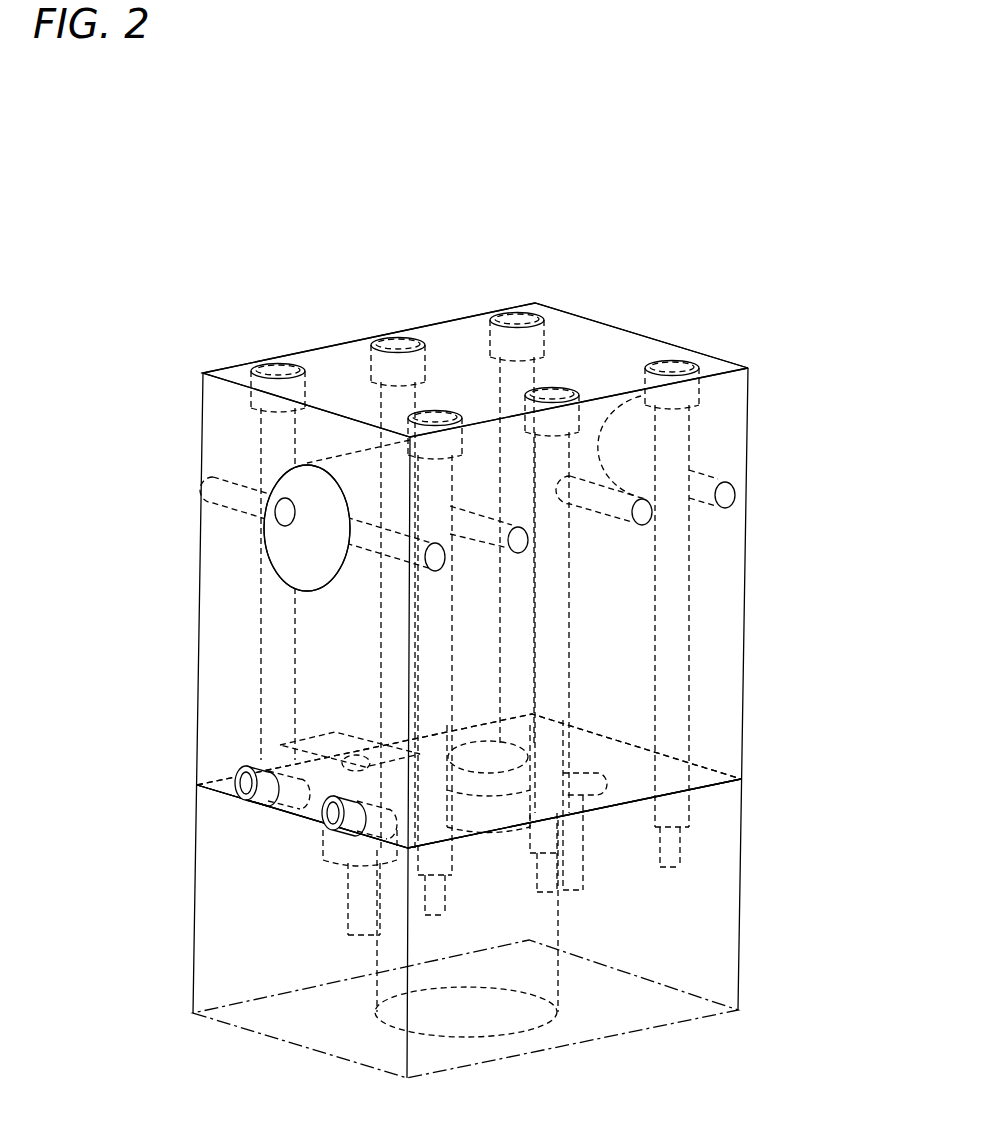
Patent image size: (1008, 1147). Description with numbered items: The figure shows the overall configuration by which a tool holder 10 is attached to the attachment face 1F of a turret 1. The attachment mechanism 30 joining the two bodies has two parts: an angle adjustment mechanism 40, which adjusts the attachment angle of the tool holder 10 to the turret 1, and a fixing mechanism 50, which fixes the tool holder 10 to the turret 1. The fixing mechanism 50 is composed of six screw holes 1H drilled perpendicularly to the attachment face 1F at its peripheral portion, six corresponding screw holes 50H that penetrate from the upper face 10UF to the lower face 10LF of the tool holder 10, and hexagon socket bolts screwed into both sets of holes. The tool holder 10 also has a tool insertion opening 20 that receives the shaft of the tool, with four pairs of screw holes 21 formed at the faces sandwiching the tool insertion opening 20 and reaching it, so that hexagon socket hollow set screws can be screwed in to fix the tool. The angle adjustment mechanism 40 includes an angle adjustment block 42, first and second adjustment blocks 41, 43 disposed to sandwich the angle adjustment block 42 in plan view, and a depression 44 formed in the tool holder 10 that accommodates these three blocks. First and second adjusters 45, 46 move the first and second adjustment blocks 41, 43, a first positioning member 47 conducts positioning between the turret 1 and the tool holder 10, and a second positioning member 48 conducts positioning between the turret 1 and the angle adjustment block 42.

The turret 1 is at (742, 930).
The attachment face 1F is at (478, 838).
The screw holes 1H is at (588, 830).
The tool holder 10 is at (745, 718).
The upper face 10UF is at (712, 362).
The lower face 10LF is at (705, 775).
The tool insertion opening 20 is at (266, 551).
The screw holes 21 is at (737, 497).
The attachment mechanism 30 is at (475, 636).
The angle adjustment mechanism 40 is at (233, 779).
The first adjustment block 41 is at (310, 750).
The angle adjustment block 42 is at (347, 760).
The second adjustment block 43 is at (232, 784).
The depression 44 is at (333, 739).
The first adjuster 45 is at (237, 797).
The second adjuster 46 is at (320, 818).
The first positioning member 47 is at (600, 815).
The second positioning member 48 is at (340, 867).
The fixing mechanism 50 is at (475, 636).
The screw holes 50H is at (538, 314).